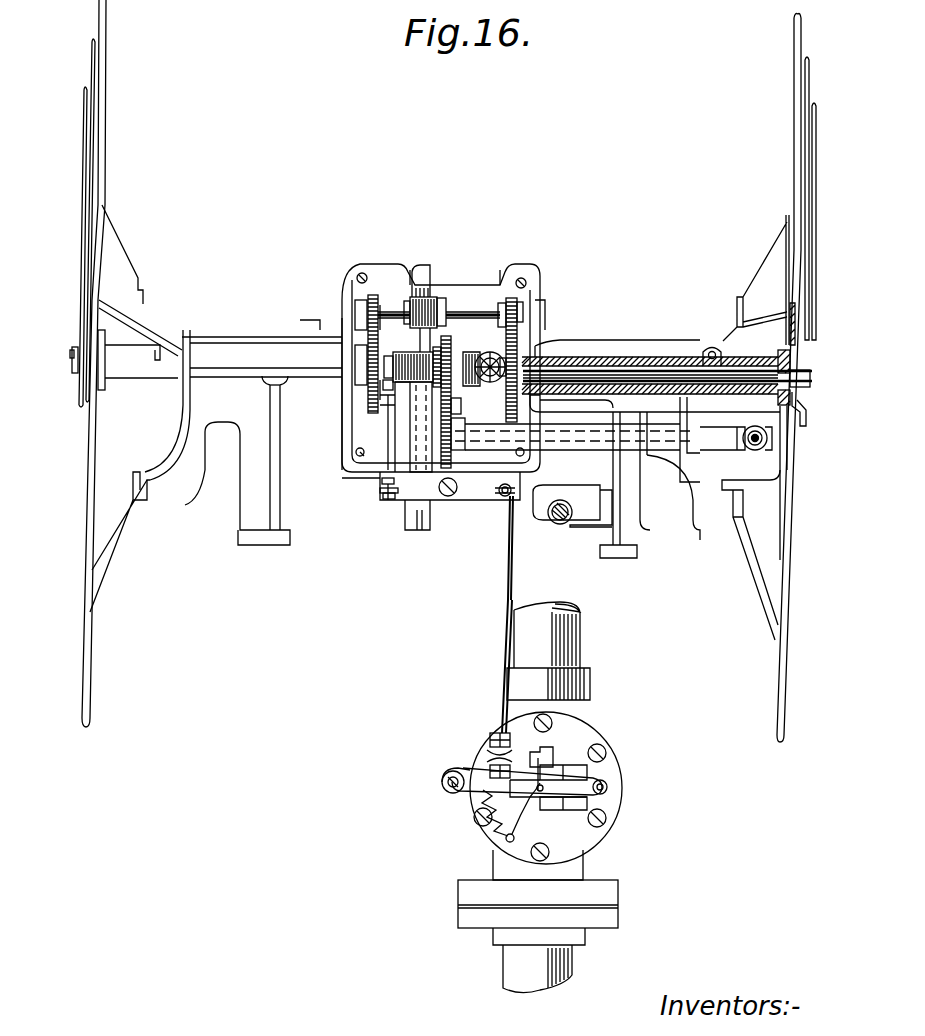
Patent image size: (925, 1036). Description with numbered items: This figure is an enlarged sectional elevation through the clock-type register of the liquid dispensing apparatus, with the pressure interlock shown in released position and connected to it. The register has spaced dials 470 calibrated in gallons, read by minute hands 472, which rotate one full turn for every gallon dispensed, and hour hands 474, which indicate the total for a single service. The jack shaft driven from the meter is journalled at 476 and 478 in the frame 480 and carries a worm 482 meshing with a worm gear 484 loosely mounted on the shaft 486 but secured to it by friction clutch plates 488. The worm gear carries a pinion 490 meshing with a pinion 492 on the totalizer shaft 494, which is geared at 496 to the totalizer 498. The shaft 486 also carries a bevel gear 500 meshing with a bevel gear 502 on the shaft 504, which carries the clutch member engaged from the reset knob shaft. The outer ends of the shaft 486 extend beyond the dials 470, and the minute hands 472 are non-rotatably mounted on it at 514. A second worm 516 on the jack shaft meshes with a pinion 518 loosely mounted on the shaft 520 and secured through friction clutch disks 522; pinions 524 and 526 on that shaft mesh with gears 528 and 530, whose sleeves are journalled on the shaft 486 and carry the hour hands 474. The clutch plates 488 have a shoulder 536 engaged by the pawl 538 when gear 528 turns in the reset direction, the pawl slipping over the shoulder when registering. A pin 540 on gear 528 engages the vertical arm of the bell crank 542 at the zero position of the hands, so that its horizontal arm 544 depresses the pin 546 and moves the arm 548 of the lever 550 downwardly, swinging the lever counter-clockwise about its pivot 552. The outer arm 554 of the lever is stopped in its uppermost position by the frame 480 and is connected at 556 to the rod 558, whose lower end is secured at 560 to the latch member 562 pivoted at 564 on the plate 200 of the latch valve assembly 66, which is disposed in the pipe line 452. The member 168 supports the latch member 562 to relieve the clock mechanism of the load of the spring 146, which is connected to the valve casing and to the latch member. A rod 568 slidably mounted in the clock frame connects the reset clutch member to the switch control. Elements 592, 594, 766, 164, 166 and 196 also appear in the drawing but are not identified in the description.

The dials 470 is at (100, 143).
The minute hands 472 is at (88, 95).
The hour hands 474 is at (93, 48).
The journal 476 is at (410, 457).
The journal 478 is at (433, 282).
The frame 480 is at (522, 272).
The worm 482 is at (448, 368).
The worm gear 484 is at (505, 272).
The shaft 486 is at (618, 371).
The friction clutch plates 488 is at (412, 296).
The pinion 490 is at (484, 352).
The pinion 492 is at (452, 448).
The totalizer shaft 494 is at (700, 470).
The gearing 496 is at (768, 438).
The totalizer 498 is at (772, 472).
The bevel gear 500 is at (495, 310).
The bevel gear 502 is at (532, 400).
The shaft 504 is at (560, 352).
The mounting 514 is at (803, 368).
The worm 516 is at (445, 300).
The pinion 518 is at (405, 300).
The shaft 520 is at (368, 306).
The friction clutch disks 522 is at (455, 340).
The pinion 524 is at (362, 300).
The pinion 526 is at (536, 300).
The gear 528 is at (358, 345).
The gear 530 is at (518, 350).
The shoulder 536 is at (385, 340).
The pawl 538 is at (342, 322).
The pin 540 is at (380, 396).
The bell crank 542 is at (385, 410).
The horizontal arm 544 is at (330, 430).
The pin 546 is at (385, 481).
The arm 548 is at (412, 494).
The lever 550 is at (462, 500).
The pivot 552 is at (450, 512).
The outer arm 554 is at (514, 500).
The connection 556 is at (500, 500).
The rod 558 is at (502, 684).
The connection 560 is at (488, 750).
The latch member 562 is at (452, 793).
The pivot 564 is at (440, 778).
The rod 568 is at (565, 508).
The bracket 592 is at (345, 328).
The sleeve 594 is at (582, 357).
The bracket 766 is at (412, 522).
The plate 200 is at (587, 732).
The cam 164 is at (556, 768).
The latch valve assembly 66 is at (612, 765).
The contact 166 is at (612, 784).
The supporting member 168 is at (590, 792).
The spring 146 is at (512, 832).
The base 196 is at (475, 868).
The pipe 452 is at (506, 958).